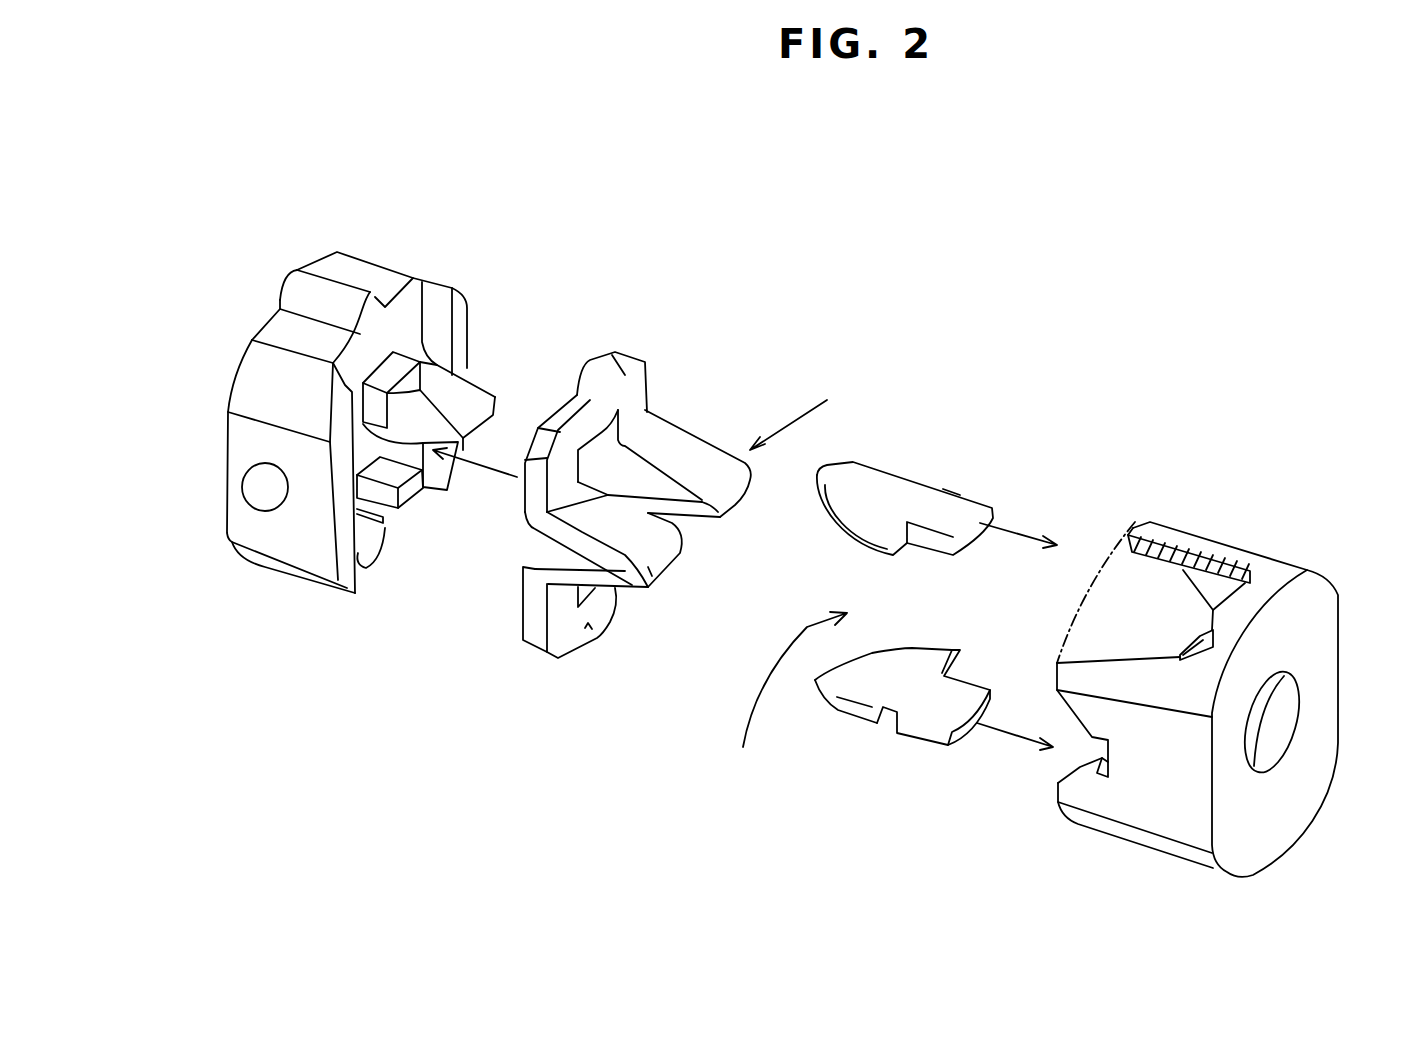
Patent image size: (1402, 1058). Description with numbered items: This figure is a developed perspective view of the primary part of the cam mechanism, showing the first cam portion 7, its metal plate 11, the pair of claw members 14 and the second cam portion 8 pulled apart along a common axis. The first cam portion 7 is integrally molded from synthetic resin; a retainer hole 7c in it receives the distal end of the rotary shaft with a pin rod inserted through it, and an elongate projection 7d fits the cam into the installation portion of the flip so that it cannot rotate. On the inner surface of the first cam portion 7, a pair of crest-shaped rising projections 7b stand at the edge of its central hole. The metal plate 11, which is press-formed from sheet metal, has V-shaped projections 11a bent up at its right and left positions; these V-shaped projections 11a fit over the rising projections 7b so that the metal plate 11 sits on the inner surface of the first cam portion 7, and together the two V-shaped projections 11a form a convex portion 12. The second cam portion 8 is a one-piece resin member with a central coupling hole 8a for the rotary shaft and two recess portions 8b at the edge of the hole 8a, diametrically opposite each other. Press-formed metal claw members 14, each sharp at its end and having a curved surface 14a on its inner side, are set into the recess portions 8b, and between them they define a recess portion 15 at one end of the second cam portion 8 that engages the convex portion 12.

The first cam portion 7 is at (250, 373).
The rising projections 7b is at (383, 637).
The retainer hole 7c is at (260, 497).
The elongate projection 7d is at (313, 287).
The second cam portion 8 is at (1213, 547).
The hole 8a is at (1290, 707).
The recess portion 8b is at (1225, 595).
The metal plate 11 is at (645, 400).
The V-shaped projections 11a is at (690, 450).
The convex portion 12 is at (806, 409).
The claw members 14 is at (882, 492).
The curved surface 14a is at (873, 688).
The recess portion 15 is at (784, 706).